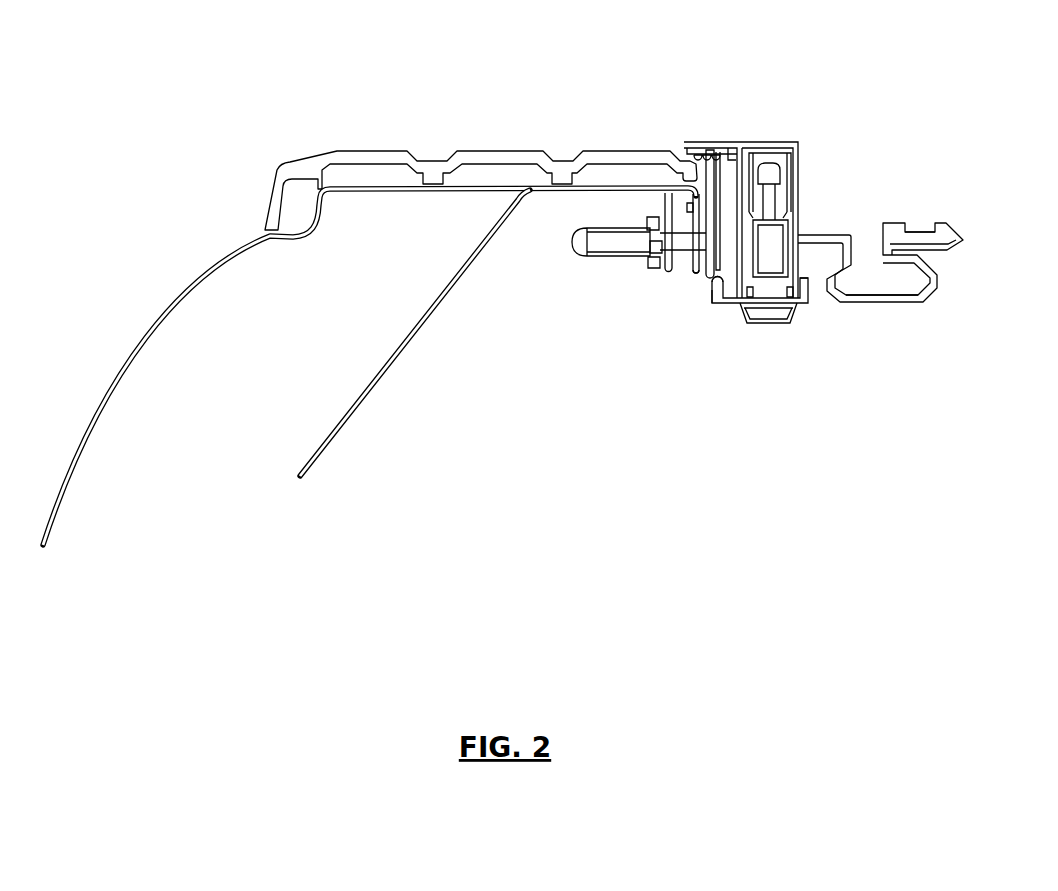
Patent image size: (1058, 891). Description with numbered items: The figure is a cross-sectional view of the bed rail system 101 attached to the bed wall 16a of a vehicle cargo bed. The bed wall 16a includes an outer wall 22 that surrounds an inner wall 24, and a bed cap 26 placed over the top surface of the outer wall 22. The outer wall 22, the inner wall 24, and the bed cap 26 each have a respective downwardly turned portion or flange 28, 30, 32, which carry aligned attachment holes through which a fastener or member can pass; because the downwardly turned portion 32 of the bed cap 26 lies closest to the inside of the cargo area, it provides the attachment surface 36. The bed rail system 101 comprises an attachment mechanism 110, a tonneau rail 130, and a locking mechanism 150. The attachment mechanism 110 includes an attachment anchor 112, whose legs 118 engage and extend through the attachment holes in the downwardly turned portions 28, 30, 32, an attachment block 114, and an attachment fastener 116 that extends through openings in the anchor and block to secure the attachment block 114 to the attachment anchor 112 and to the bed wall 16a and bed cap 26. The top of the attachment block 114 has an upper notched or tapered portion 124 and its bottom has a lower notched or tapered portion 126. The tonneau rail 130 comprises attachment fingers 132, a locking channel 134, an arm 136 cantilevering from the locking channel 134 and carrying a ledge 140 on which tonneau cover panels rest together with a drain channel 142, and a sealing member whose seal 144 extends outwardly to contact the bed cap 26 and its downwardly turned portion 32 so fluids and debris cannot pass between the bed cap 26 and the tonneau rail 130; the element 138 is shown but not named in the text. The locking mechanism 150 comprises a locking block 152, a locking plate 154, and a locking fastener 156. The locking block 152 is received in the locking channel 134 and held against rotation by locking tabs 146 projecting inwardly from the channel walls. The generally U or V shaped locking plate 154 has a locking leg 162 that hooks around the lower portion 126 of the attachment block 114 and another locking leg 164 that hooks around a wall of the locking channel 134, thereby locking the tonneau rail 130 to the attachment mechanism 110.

The bed wall 16a is at (395, 107).
The outer wall 22 is at (178, 293).
The inner wall 24 is at (471, 247).
The bed cap 26 is at (340, 160).
The downwardly turned portion 28 is at (667, 194).
The downwardly turned portion 30 is at (665, 208).
The downwardly turned portion 32 is at (704, 280).
The attachment surface 36 is at (722, 260).
The bed rail system 101 is at (889, 111).
The attachment mechanism 110 is at (563, 219).
The attachment anchor 112 is at (690, 270).
The attachment block 114 is at (718, 208).
The attachment fastener 116 is at (612, 253).
The leg 118 is at (657, 255).
The upper notched or tapered portion 124 is at (742, 165).
The lower notched or tapered portion 126 is at (713, 298).
The tonneau rail 130 is at (781, 141).
The attachment finger 132 is at (733, 148).
The locking channel 134 is at (786, 152).
The arm 136 is at (880, 213).
The ribs 138 is at (705, 150).
The ledge 140 is at (915, 232).
The drain channel 142 is at (885, 290).
The seal 144 is at (700, 152).
The locking tab 146 is at (788, 206).
The locking mechanism 150 is at (700, 396).
The locking block 152 is at (770, 272).
The locking plate 154 is at (727, 310).
The locking fastener 156 is at (762, 328).
The locking leg 162 is at (712, 300).
The locking leg 164 is at (803, 293).